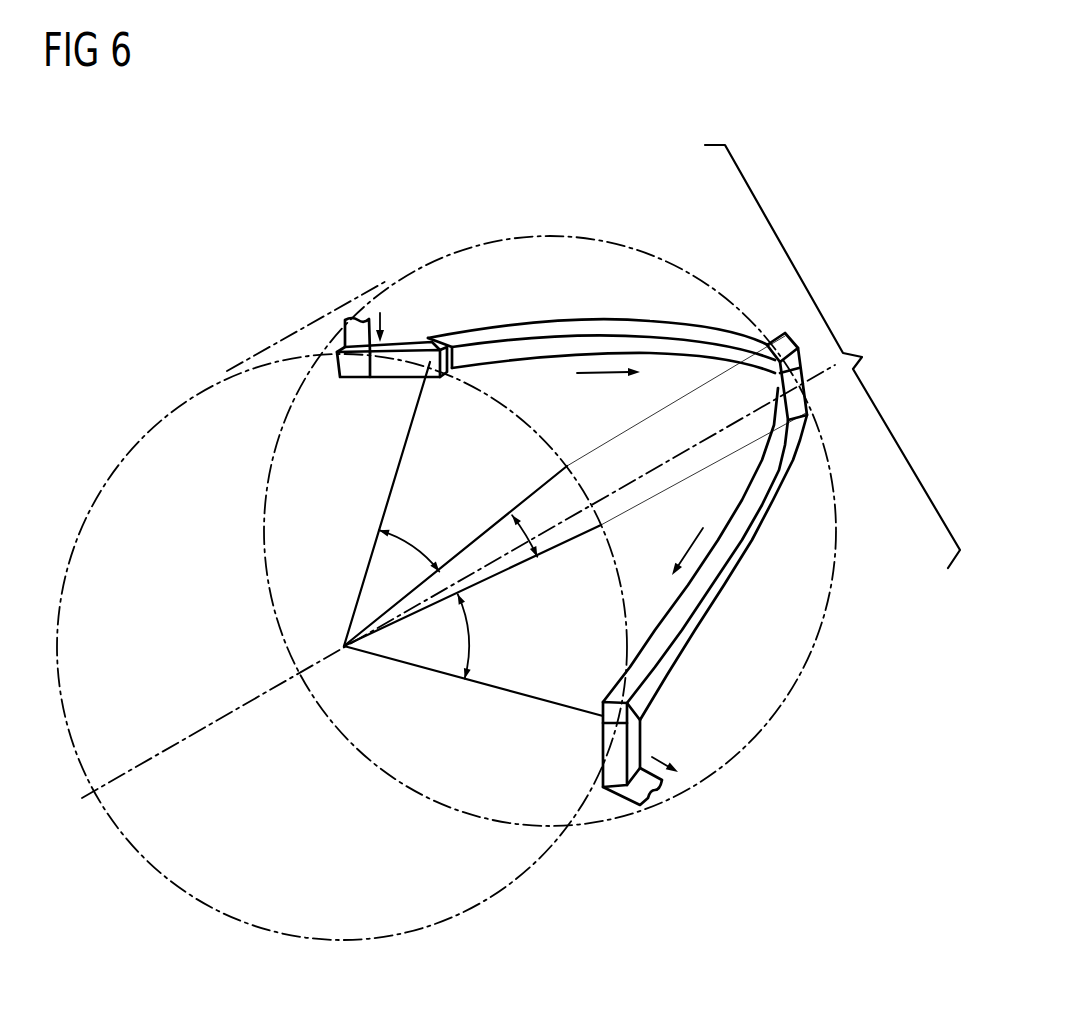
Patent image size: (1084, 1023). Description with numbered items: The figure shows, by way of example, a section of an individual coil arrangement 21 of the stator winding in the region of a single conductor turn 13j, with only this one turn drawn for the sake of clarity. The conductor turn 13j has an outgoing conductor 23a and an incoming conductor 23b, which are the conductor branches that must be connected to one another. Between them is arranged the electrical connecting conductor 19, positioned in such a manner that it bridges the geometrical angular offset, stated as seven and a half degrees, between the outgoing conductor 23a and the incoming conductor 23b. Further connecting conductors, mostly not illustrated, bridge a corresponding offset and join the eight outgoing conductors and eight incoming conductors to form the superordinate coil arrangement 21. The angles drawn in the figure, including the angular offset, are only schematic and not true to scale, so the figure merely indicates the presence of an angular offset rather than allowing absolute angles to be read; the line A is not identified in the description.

The coil arrangement 21 is at (188, 277).
The electrical connecting conductor 19 is at (408, 340).
The outgoing conductor 23a is at (690, 602).
The incoming conductor 23b is at (515, 327).
The conductor turn 13j is at (832, 356).
The axis A is at (167, 752).